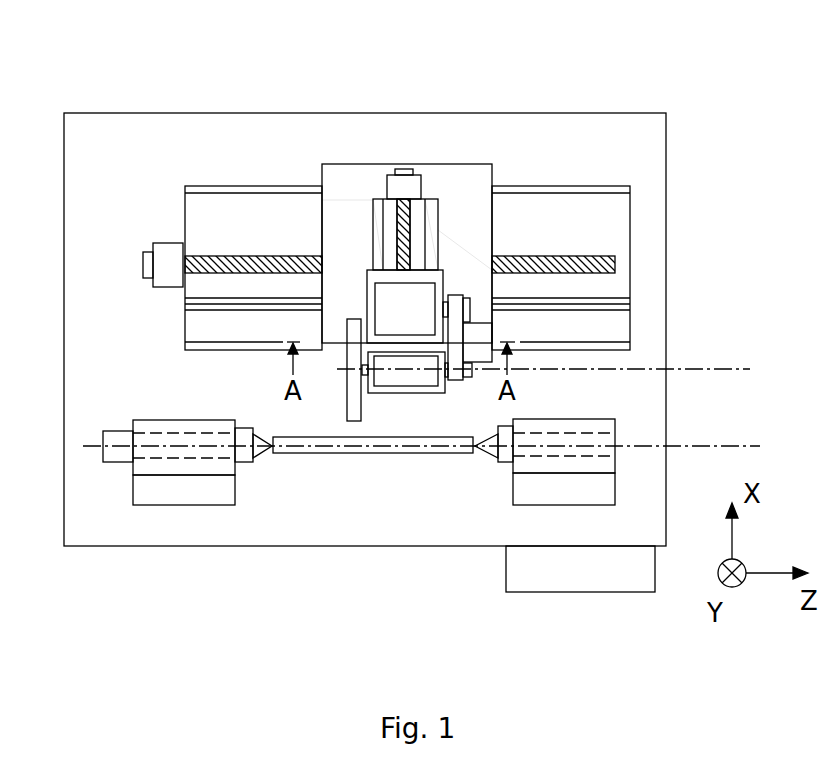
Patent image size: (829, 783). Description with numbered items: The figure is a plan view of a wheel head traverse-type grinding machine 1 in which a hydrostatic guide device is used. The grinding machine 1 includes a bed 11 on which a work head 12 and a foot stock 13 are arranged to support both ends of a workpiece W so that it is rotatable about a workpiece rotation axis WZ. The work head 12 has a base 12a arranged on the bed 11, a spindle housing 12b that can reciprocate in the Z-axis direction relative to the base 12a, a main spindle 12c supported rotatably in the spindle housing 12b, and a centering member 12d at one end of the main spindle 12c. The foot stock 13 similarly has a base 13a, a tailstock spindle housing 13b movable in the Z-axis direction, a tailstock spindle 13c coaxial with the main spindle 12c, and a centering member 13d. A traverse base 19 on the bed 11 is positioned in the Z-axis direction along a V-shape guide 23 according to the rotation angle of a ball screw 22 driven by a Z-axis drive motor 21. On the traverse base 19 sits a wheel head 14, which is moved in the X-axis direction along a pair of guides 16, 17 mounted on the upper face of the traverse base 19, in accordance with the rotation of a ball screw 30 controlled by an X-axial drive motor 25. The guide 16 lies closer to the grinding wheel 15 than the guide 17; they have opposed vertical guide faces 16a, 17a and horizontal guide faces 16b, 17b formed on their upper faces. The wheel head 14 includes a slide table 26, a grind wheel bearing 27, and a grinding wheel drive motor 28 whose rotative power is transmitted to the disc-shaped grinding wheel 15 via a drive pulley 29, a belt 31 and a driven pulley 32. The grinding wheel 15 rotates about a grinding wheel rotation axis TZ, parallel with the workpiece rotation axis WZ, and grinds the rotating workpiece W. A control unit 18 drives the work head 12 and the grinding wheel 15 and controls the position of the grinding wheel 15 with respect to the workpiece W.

The grinding machine 1 is at (677, 96).
The bed 11 is at (605, 113).
The work head 12 is at (121, 500).
The base 12a is at (213, 487).
The spindle housing 12b is at (162, 468).
The main spindle 12c is at (240, 457).
The centering member 12d is at (260, 453).
The foot stock 13 is at (630, 421).
The base 13a is at (552, 498).
The tailstock spindle housing 13b is at (553, 428).
The tailstock spindle 13c is at (503, 452).
The centering member 13d is at (487, 455).
The wheel head 14 is at (492, 250).
The grinding wheel 15 is at (347, 415).
The guide 16 is at (385, 237).
The vertical guide face 16a is at (387, 233).
The horizontal guide face 16b is at (377, 228).
The guide 17 is at (433, 233).
The vertical guide face 17a is at (430, 233).
The horizontal guide face 17b is at (472, 260).
The control unit 18 is at (617, 592).
The traverse base 19 is at (337, 183).
The Z-axis drive motor 21 is at (168, 257).
The ball screw 22 is at (207, 257).
The V-shape guide 23 is at (622, 290).
The X-axial drive motor 25 is at (387, 183).
The slide table 26 is at (443, 283).
The grind wheel bearing 27 is at (398, 377).
The grinding wheel drive motor 28 is at (385, 295).
The drive pulley 29 is at (492, 258).
The ball screw 30 is at (398, 250).
The belt 31 is at (480, 335).
The driven pulley 32 is at (465, 383).
The workpiece W is at (413, 453).
The grinding wheel rotation axis TZ is at (732, 369).
The workpiece rotation axis WZ is at (728, 446).